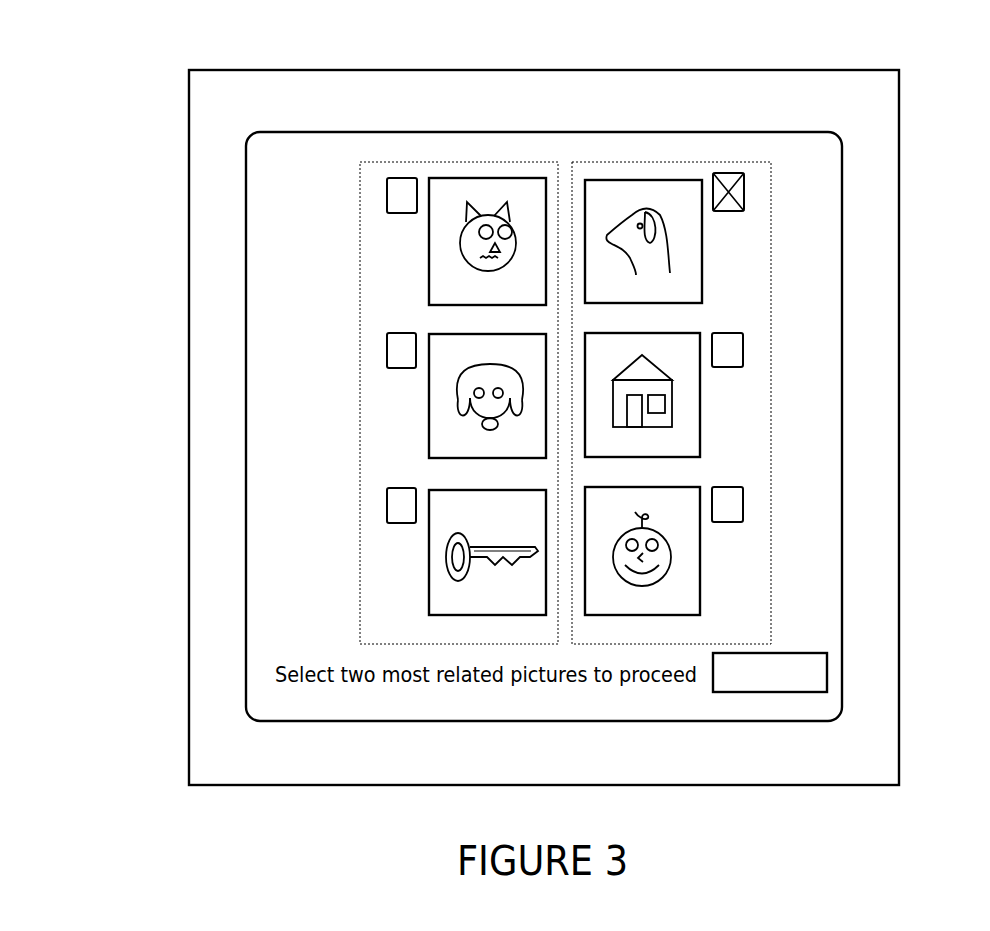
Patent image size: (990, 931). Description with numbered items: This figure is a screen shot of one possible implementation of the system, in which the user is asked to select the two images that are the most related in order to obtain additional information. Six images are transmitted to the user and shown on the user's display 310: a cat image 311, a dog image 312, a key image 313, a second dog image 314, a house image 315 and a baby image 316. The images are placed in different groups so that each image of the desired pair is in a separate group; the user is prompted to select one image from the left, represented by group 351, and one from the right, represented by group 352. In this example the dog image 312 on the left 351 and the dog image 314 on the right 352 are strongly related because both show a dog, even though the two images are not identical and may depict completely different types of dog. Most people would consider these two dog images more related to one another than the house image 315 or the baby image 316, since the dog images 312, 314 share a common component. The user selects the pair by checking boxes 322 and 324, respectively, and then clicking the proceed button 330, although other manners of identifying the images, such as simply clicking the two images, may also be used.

The display 310 is at (548, 70).
The left group 351 is at (457, 162).
The right group 352 is at (672, 162).
The cat image 311 is at (429, 243).
The dog image 312 is at (428, 395).
The key image 313 is at (428, 555).
The dog image 314 is at (702, 240).
The house image 315 is at (702, 395).
The baby image 316 is at (702, 551).
The checking box 322 is at (387, 350).
The checking box 324 is at (727, 173).
The proceed button 330 is at (828, 672).